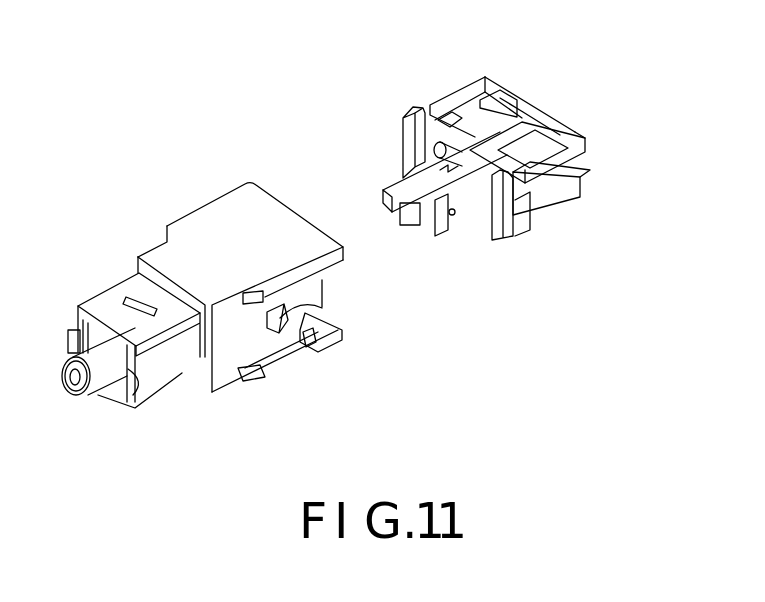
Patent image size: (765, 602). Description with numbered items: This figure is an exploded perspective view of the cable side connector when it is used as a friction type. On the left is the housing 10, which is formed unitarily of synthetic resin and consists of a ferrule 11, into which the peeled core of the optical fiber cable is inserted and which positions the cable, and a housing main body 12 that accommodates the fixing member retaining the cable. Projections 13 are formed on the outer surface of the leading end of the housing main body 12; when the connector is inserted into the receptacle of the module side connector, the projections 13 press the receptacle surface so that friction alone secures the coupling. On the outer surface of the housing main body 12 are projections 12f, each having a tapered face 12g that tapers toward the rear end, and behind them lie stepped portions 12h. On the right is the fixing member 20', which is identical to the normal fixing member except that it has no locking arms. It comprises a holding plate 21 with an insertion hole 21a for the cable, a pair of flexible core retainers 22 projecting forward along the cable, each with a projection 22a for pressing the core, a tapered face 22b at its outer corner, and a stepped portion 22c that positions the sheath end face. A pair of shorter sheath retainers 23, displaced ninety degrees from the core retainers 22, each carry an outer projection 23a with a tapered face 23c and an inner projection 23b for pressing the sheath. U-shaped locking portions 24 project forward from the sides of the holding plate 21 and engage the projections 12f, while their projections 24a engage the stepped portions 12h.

The housing 10 is at (177, 213).
The ferrule 11 is at (98, 375).
The housing main body 12 is at (267, 215).
The projection 12f is at (282, 343).
The tapered face 12g is at (337, 337).
The stepped portion 12h is at (307, 343).
The projection 13 is at (138, 298).
The fixing member 20' is at (440, 48).
The holding plate 21 is at (490, 78).
The insertion hole 21a is at (547, 122).
The core retainer 22 is at (468, 210).
The projection 22a is at (400, 190).
The tapered face 22b is at (413, 230).
The stepped portion 22c is at (443, 230).
The sheath retainer 23 is at (510, 103).
The projection 23a is at (445, 118).
The projection 23b is at (523, 230).
The tapered face 23c is at (407, 127).
The locking portion 24 is at (577, 193).
The projection 24a is at (510, 230).